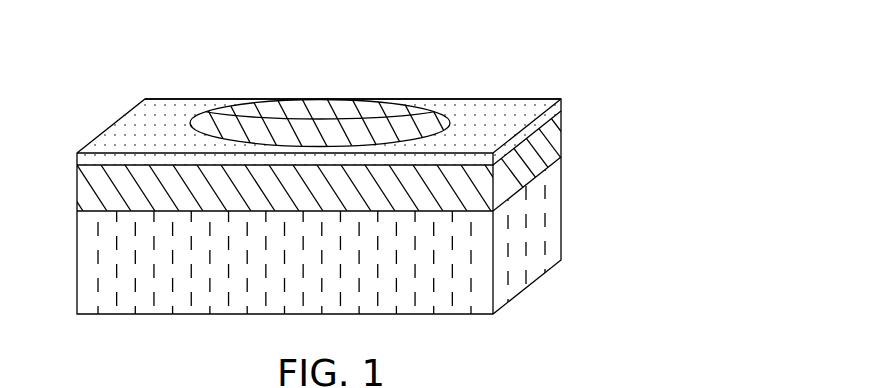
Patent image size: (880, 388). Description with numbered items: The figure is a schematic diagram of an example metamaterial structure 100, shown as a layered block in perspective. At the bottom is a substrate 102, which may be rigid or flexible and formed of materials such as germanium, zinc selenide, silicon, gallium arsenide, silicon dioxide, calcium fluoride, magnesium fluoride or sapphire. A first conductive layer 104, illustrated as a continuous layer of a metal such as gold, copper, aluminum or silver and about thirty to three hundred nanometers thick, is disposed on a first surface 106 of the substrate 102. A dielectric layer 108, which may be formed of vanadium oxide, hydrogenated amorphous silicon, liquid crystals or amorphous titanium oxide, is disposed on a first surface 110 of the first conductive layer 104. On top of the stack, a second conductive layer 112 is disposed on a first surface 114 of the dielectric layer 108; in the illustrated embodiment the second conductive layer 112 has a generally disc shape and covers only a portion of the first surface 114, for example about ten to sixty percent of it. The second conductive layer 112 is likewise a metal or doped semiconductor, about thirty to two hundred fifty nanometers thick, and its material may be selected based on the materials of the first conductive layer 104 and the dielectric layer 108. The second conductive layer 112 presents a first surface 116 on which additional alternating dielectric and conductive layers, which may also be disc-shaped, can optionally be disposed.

The metamaterial structure 100 is at (643, 65).
The substrate 102 is at (562, 216).
The first conductive layer 104 is at (562, 161).
The first surface 106 is at (99, 208).
The dielectric layer 108 is at (562, 115).
The first surface 110 is at (98, 164).
The second conductive layer 112 is at (352, 112).
The first surface 114 is at (127, 115).
The first surface 116 is at (316, 98).